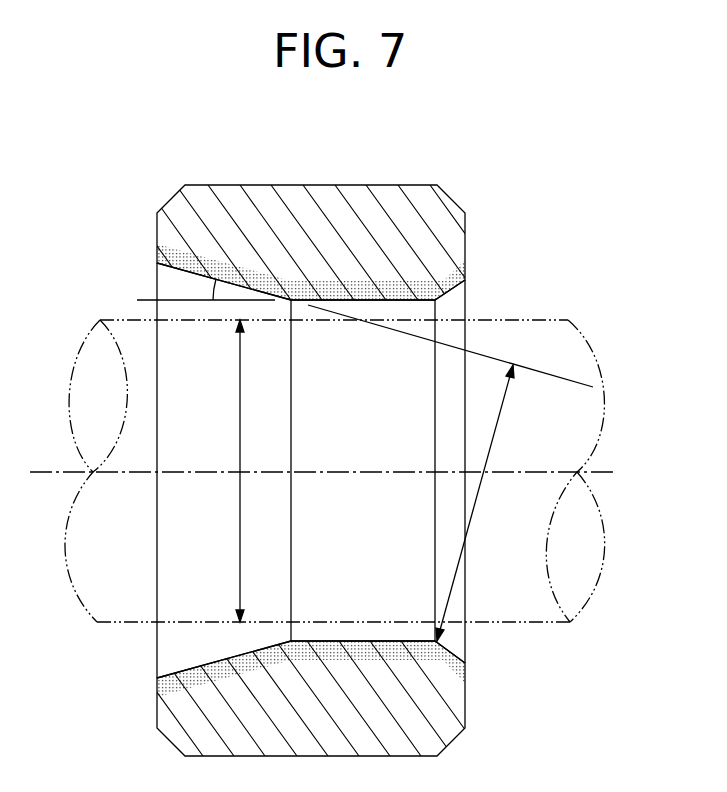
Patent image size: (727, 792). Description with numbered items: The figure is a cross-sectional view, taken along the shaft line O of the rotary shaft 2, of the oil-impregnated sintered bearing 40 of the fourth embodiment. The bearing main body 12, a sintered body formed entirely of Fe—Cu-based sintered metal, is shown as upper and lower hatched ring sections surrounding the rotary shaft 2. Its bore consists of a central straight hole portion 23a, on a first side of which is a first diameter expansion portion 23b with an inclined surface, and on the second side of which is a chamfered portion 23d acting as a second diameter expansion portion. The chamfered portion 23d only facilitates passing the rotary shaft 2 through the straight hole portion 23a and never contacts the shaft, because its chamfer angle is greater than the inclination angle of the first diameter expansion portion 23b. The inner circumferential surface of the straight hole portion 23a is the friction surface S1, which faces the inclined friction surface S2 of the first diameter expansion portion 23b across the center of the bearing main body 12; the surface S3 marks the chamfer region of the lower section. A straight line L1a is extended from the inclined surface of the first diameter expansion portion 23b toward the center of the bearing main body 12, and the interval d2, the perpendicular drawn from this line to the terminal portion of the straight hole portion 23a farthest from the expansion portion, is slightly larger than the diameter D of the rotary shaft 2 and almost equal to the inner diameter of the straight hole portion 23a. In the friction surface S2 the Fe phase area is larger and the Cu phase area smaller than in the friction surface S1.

The bearing 40 is at (285, 420).
The bearing main body 12 is at (322, 185).
The rotary shaft 2 is at (557, 320).
The straight hole portion 23a is at (368, 300).
The first diameter expansion portion 23b is at (190, 272).
The chamfered portion 23d is at (437, 299).
The friction surface S1 is at (358, 640).
The inclined friction surface S2 is at (205, 664).
The chamfer (bottom) S3 is at (445, 650).
The diameter of the rotary shaft D is at (225, 471).
The interval d2 is at (475, 503).
The straight line L1a is at (572, 377).
The shaft line O is at (336, 472).